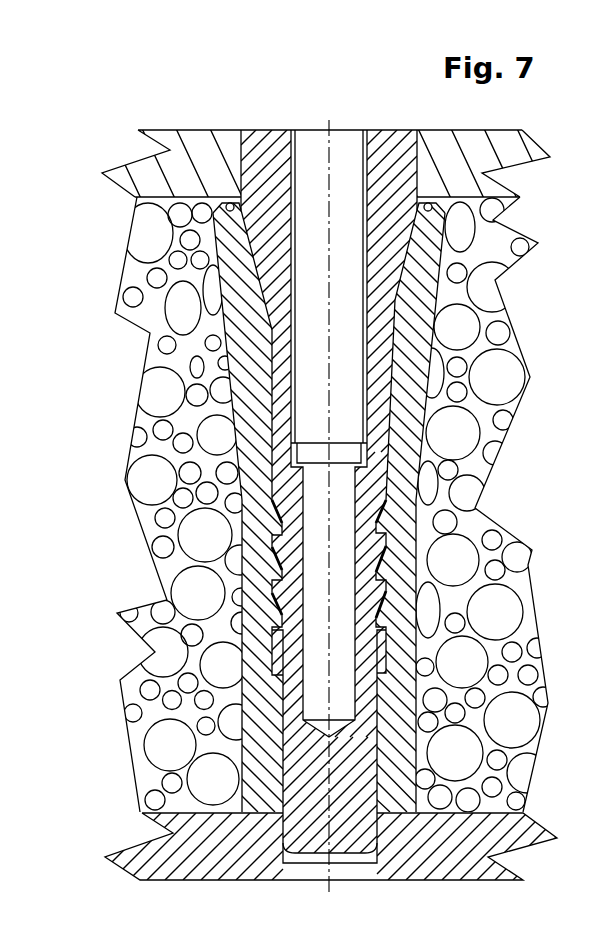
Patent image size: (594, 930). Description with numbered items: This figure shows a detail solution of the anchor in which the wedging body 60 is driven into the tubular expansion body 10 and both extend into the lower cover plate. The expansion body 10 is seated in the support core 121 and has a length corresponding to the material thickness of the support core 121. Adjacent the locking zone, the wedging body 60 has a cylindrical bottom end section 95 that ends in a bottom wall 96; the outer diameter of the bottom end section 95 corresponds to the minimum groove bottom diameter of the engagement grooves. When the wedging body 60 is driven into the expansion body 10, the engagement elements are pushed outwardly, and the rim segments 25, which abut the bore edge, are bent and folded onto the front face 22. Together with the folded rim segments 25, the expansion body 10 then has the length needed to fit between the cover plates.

The expansion body 10 is at (212, 265).
The front face 22 is at (223, 212).
The rim segments 25 is at (232, 205).
The wedging body 60 is at (272, 150).
The bottom end section 95 is at (300, 775).
The bottom wall 96 is at (318, 852).
The support core 121 is at (150, 443).